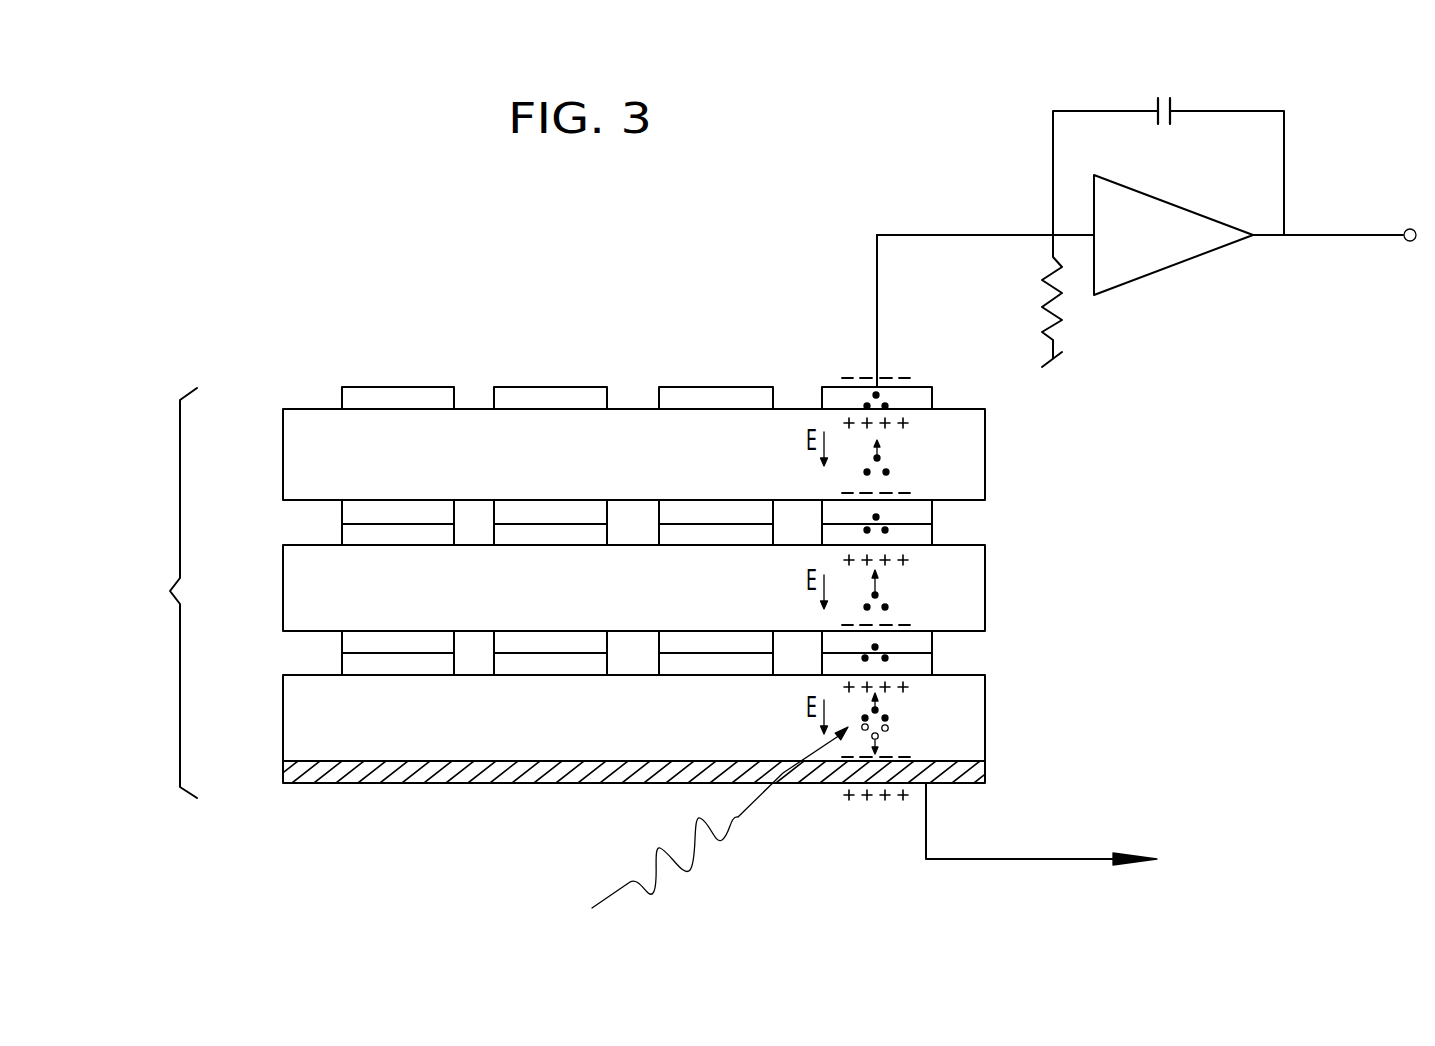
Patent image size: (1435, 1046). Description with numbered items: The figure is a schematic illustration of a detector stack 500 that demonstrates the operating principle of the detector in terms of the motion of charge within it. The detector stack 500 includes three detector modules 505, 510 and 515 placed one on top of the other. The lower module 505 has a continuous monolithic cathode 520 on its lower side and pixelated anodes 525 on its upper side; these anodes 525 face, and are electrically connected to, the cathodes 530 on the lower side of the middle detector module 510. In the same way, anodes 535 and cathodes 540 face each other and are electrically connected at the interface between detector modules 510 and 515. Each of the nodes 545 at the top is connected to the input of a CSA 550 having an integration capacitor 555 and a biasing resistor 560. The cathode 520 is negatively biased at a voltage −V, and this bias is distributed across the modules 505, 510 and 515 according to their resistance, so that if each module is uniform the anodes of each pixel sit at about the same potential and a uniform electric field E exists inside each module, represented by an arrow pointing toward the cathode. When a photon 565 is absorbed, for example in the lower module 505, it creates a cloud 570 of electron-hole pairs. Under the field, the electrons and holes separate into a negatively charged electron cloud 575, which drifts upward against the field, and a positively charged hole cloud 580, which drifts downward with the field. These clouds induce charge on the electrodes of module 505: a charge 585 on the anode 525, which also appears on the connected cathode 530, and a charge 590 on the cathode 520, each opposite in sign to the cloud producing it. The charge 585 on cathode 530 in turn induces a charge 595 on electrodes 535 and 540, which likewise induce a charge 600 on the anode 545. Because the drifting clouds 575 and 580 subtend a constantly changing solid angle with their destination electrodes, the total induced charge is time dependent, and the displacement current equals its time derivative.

The detector stack 500 is at (159, 593).
The lower detector module 505 is at (284, 686).
The detector module 510 is at (284, 557).
The detector module 515 is at (284, 428).
The continuous monolithic cathode 520 is at (343, 783).
The pixelated anodes 525 is at (920, 667).
The cathodes 530 is at (925, 640).
The anodes 535 is at (925, 538).
The cathodes 540 is at (930, 511).
The nodes 545 is at (920, 400).
The CSA 550 is at (1152, 265).
The integration capacitor 555 is at (1165, 95).
The biasing resistor 560 is at (1068, 295).
The photon 565 is at (720, 818).
The cloud of electron-hole pairs 570 is at (890, 722).
The electron cloud 575 is at (890, 397).
The hole cloud 580 is at (890, 733).
The charge on electrode 525 585 is at (845, 682).
The charge on electrode 520 590 is at (830, 755).
The charge on electrodes 535 and 540 595 is at (845, 553).
The charge on anode 545 600 is at (842, 422).